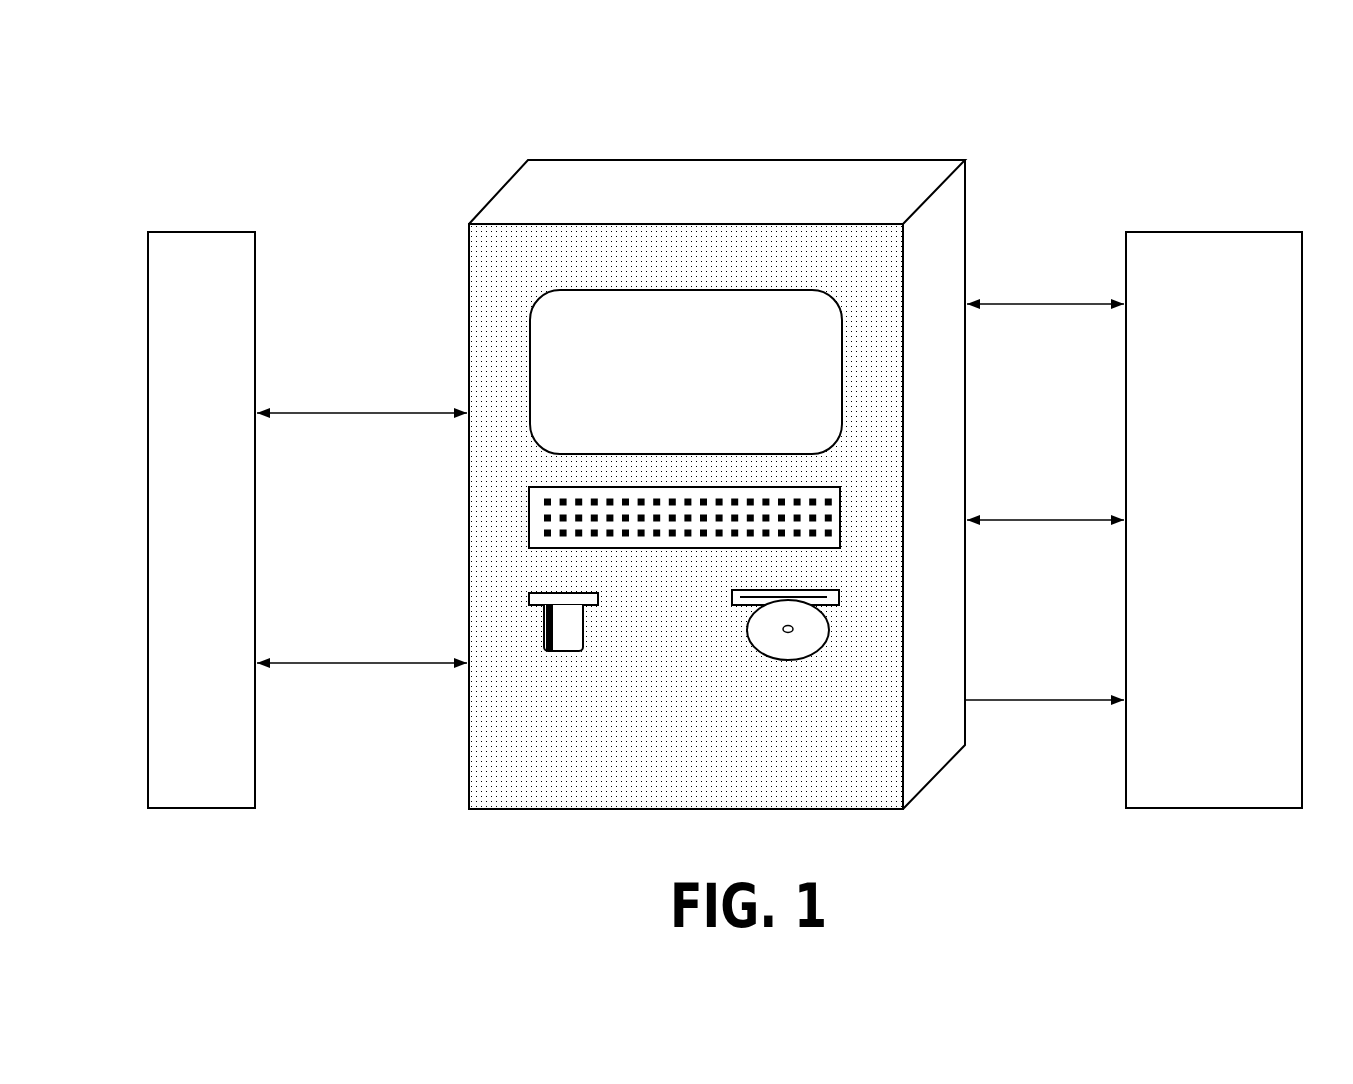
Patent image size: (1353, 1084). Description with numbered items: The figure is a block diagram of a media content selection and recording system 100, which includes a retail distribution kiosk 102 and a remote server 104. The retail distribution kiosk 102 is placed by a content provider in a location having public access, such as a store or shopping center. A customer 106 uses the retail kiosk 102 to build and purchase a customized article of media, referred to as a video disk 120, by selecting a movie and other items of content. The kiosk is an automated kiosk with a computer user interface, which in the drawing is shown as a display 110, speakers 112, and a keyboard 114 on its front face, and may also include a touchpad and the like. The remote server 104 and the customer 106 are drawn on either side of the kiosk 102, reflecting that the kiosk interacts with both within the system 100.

The media content selection and recording system 100 is at (415, 140).
The retail distribution kiosk 102 is at (788, 160).
The remote server 104 is at (202, 232).
The customer 106 is at (1217, 232).
The display 110 is at (670, 378).
The speakers 112 is at (560, 481).
The keyboard 114 is at (799, 481).
The video disk 120 is at (785, 662).